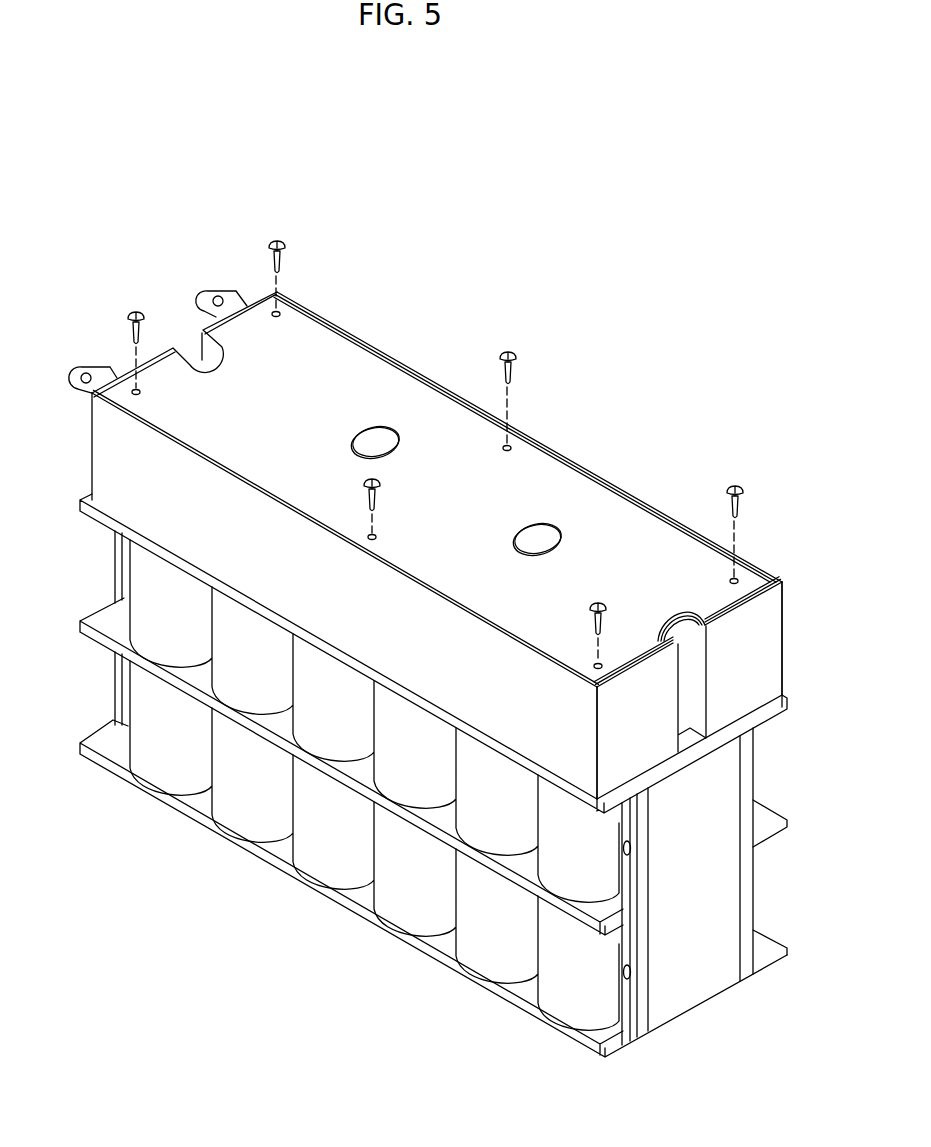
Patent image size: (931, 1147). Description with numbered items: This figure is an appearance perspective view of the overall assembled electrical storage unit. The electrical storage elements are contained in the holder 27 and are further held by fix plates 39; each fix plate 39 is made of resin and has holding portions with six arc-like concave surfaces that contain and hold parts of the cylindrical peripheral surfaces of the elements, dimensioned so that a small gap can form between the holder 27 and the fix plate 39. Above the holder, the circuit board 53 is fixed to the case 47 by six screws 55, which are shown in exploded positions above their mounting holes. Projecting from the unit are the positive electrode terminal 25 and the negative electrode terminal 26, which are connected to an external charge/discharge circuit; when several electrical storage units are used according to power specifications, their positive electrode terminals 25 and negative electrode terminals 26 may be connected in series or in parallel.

The positive electrode terminal 25 is at (207, 292).
The negative electrode terminal 26 is at (97, 377).
The holder 27 is at (680, 987).
The fix plate 39 is at (743, 787).
The case 47 is at (757, 657).
The circuit board 53 is at (438, 493).
The screw 55 is at (272, 234).